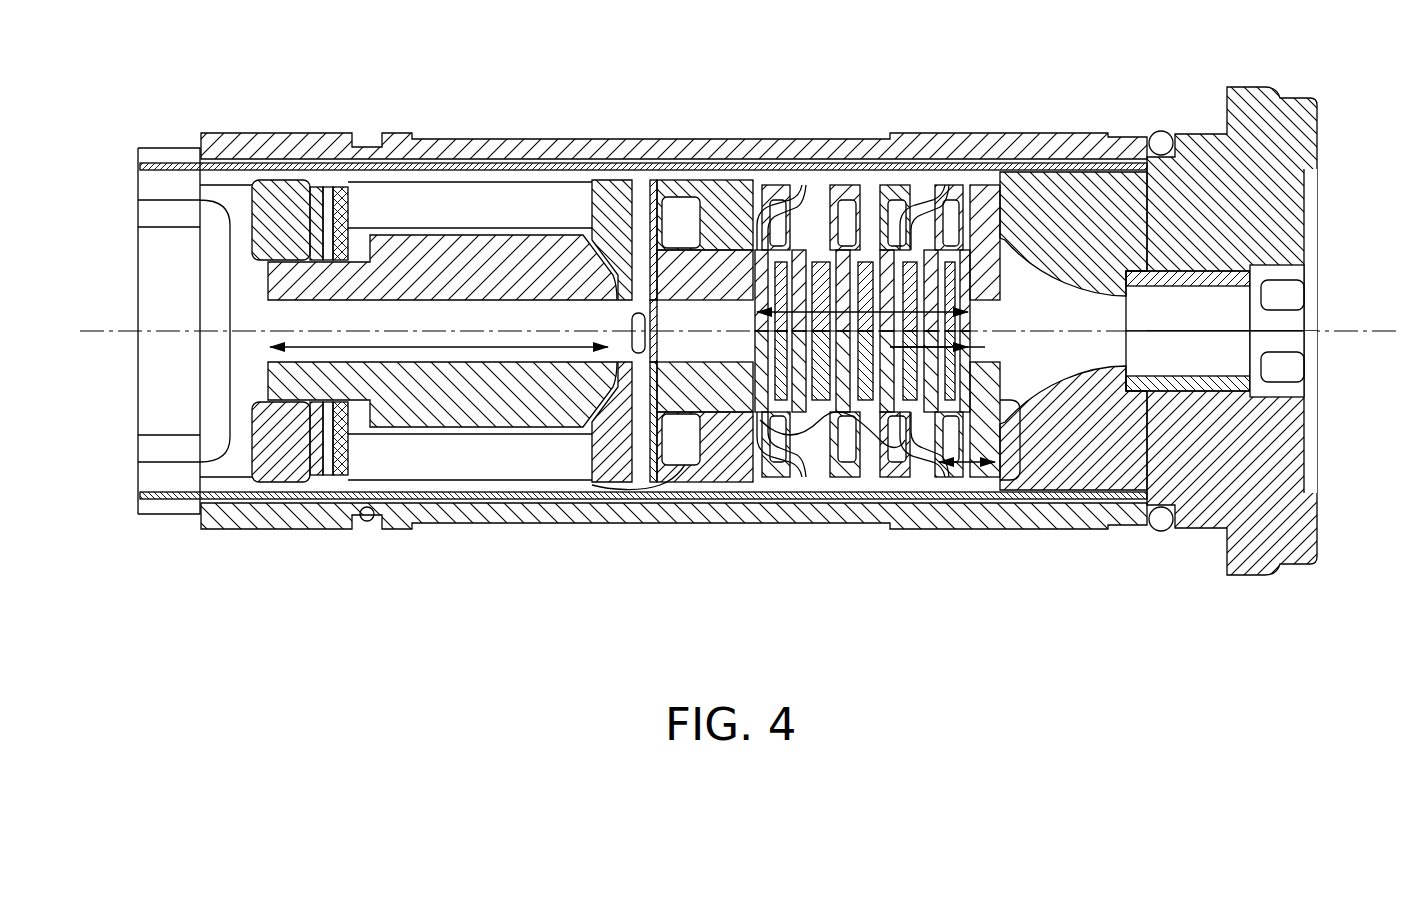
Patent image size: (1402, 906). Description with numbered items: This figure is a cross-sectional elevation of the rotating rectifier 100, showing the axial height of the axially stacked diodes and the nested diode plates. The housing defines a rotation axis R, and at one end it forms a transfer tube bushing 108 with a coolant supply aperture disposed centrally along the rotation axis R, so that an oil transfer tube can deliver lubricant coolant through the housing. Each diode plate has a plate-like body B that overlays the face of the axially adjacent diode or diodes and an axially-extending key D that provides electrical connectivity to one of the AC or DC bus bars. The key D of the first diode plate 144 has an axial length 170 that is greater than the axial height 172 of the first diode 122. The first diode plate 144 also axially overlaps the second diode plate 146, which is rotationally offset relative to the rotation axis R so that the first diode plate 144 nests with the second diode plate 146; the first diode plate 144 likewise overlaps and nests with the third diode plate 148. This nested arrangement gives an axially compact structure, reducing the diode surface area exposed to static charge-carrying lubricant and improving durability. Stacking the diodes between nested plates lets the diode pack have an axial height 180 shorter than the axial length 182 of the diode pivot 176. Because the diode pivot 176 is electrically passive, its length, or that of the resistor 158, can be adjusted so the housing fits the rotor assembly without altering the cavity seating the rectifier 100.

The rectifier 100 is at (332, 608).
The transfer tube bushing 108 is at (1077, 285).
The first diode 122 is at (945, 255).
The first diode plate 144 is at (985, 420).
The second diode plate 146 is at (925, 250).
The third diode plate 148 is at (958, 255).
The resistor 158 is at (673, 395).
The axial length 170 is at (1008, 470).
The axial height 172 is at (940, 330).
The diode pivot 176 is at (403, 258).
The axial height 180 is at (790, 250).
The axial length 182 is at (437, 350).
The plate-like body B is at (988, 250).
The axially-extending key D is at (945, 468).
The rotation axis R is at (1340, 328).